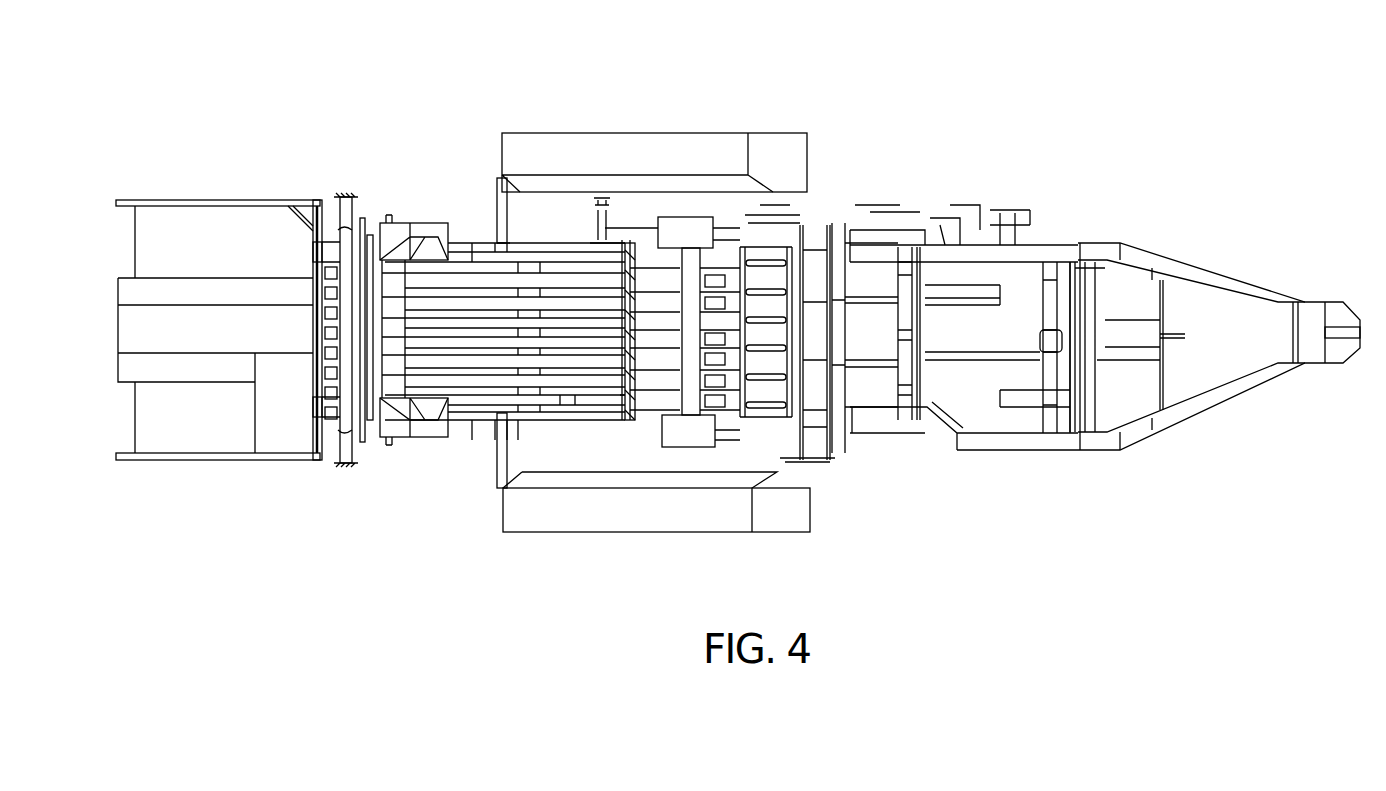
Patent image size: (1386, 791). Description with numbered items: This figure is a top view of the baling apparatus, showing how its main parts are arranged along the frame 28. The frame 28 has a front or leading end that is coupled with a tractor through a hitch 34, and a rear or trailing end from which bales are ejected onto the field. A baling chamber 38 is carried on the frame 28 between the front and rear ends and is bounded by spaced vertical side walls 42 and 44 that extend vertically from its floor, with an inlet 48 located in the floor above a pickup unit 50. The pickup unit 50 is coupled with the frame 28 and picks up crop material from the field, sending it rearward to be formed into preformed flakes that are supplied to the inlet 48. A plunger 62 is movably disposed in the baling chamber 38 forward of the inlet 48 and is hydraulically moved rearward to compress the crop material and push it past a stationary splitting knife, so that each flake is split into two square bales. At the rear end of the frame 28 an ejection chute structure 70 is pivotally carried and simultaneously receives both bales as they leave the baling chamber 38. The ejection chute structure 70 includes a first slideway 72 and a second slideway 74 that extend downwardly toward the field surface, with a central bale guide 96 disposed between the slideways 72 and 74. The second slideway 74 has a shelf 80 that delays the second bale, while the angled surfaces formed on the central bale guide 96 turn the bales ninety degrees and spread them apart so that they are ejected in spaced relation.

The ejection chute structure 70 is at (116, 112).
The first slideway 72 is at (192, 217).
The second slideway 74 is at (193, 441).
The central bale guide 96 is at (290, 321).
The shelf 80 is at (300, 414).
The vertical side wall 42 is at (472, 243).
The vertical side wall 44 is at (472, 420).
The baling chamber 38 is at (571, 260).
The frame 28 is at (531, 133).
The plunger 62 is at (683, 258).
The pickup unit 50 is at (896, 446).
The hitch 34 is at (1340, 310).
The inlet 48 is at (568, 405).